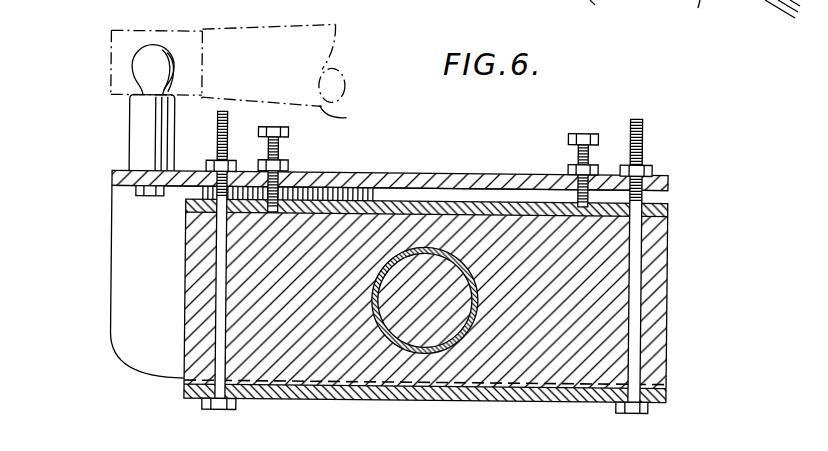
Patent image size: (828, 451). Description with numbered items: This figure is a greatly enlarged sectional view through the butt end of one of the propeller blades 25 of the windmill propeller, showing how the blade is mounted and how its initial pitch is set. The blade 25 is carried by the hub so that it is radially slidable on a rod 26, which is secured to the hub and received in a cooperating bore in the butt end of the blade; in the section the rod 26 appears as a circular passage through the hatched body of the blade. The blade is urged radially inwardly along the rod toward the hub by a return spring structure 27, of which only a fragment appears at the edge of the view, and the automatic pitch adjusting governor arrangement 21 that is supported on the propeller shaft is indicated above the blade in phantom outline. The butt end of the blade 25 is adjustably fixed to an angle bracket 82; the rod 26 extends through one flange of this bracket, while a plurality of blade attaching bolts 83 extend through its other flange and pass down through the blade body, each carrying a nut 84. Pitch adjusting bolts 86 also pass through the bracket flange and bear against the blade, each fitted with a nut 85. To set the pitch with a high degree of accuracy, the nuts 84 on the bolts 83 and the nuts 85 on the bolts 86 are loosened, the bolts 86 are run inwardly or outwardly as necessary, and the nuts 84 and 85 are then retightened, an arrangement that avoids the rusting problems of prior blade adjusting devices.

The pitch adjusting governor arrangement 21 is at (345, 118).
The propeller blade 25 is at (670, 242).
The rod 26 is at (440, 347).
The return spring structure 27 is at (658, 0).
The angle bracket 82 is at (112, 224).
The blade attaching bolt 83 is at (217, 318).
The nut 84 is at (652, 170).
The nut 85 is at (288, 164).
The pitch adjusting bolt 86 is at (278, 147).